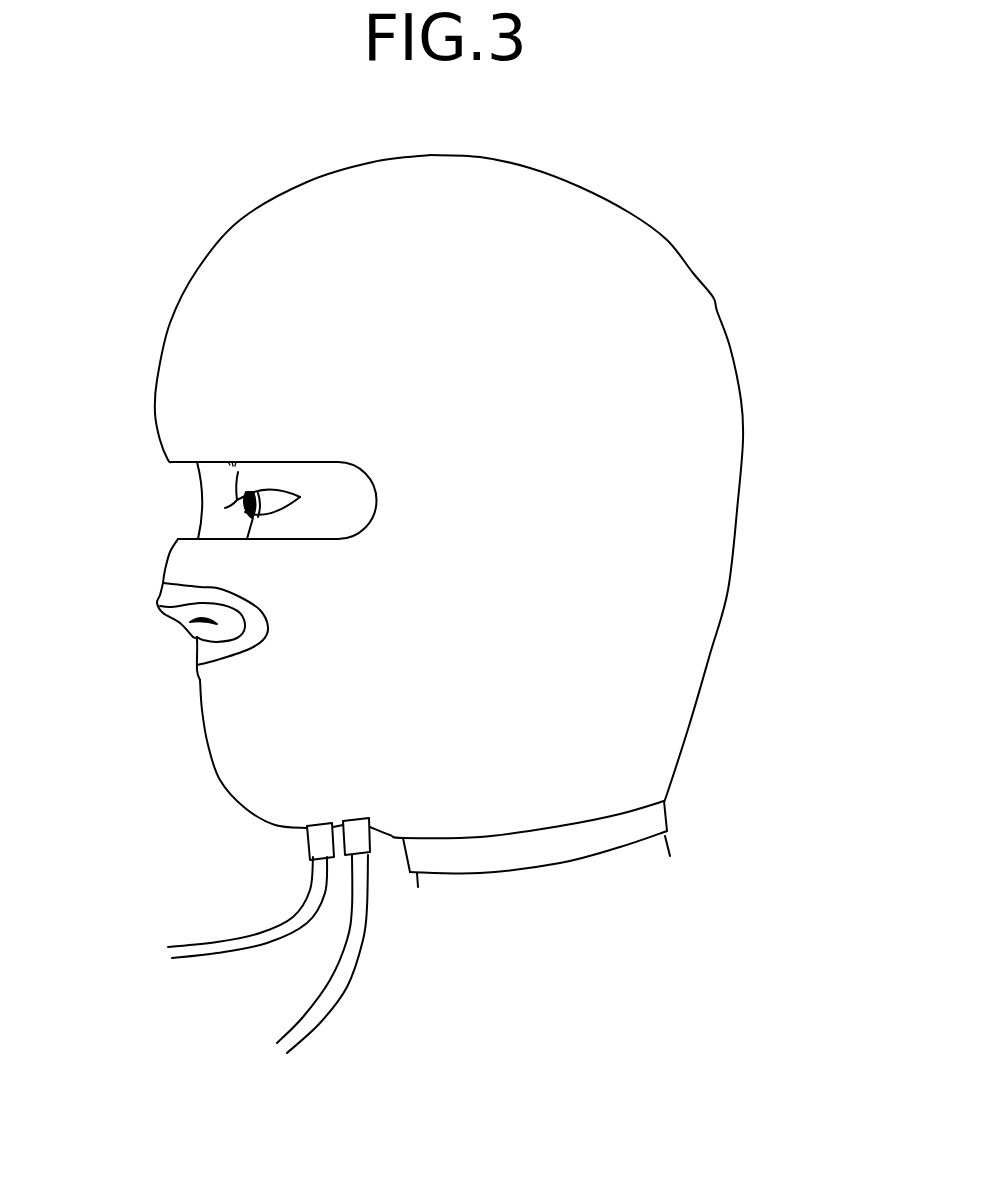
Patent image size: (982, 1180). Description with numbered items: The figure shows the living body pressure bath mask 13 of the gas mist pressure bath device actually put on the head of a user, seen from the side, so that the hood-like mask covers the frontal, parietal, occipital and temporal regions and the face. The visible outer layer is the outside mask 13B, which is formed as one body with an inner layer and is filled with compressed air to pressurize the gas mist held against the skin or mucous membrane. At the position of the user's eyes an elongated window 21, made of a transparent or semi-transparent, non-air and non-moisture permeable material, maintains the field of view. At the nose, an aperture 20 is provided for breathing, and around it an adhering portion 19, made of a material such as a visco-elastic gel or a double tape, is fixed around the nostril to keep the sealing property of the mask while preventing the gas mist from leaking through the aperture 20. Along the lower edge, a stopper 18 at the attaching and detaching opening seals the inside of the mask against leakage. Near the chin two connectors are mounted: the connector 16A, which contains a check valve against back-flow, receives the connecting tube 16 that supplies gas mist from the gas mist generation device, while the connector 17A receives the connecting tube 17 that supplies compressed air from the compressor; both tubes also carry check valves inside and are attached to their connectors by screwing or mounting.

The living body pressure bath mask 13 is at (687, 232).
The outside mask 13B is at (717, 311).
The window 21 is at (173, 510).
The adhering portion 19 is at (158, 593).
The aperture 20 is at (169, 637).
The stopper 18 is at (667, 810).
The connector 17A is at (307, 842).
The connector 16A is at (372, 832).
The connecting tube 17 is at (190, 940).
The connecting tube 16 is at (360, 955).